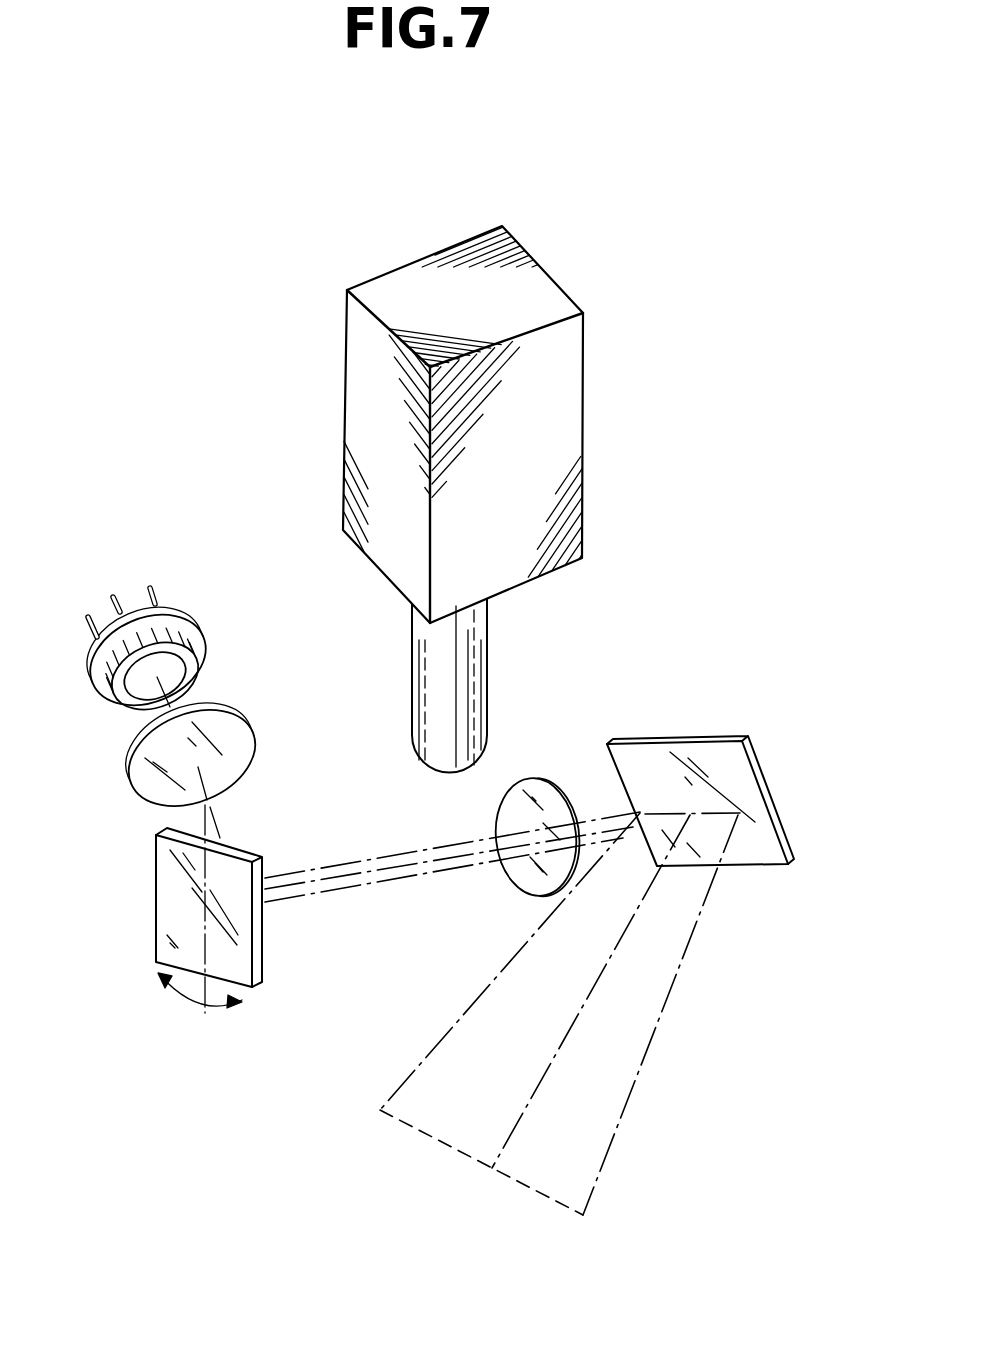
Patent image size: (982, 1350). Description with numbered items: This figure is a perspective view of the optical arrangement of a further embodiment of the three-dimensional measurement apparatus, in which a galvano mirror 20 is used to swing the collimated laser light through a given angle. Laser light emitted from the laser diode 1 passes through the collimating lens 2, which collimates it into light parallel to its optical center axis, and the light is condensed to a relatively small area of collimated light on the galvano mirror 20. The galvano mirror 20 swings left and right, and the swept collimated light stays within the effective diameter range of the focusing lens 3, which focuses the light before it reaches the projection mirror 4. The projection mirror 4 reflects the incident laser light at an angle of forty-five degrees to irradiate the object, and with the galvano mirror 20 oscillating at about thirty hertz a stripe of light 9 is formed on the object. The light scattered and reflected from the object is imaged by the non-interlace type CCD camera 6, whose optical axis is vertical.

The laser diode 1 is at (170, 607).
The collimating lens 2 is at (233, 712).
The galvano mirror 20 is at (158, 927).
The focusing lens 3 is at (546, 780).
The projection mirror 4 is at (756, 768).
The CCD camera 6 is at (583, 443).
The stripe of light 9 is at (432, 1137).